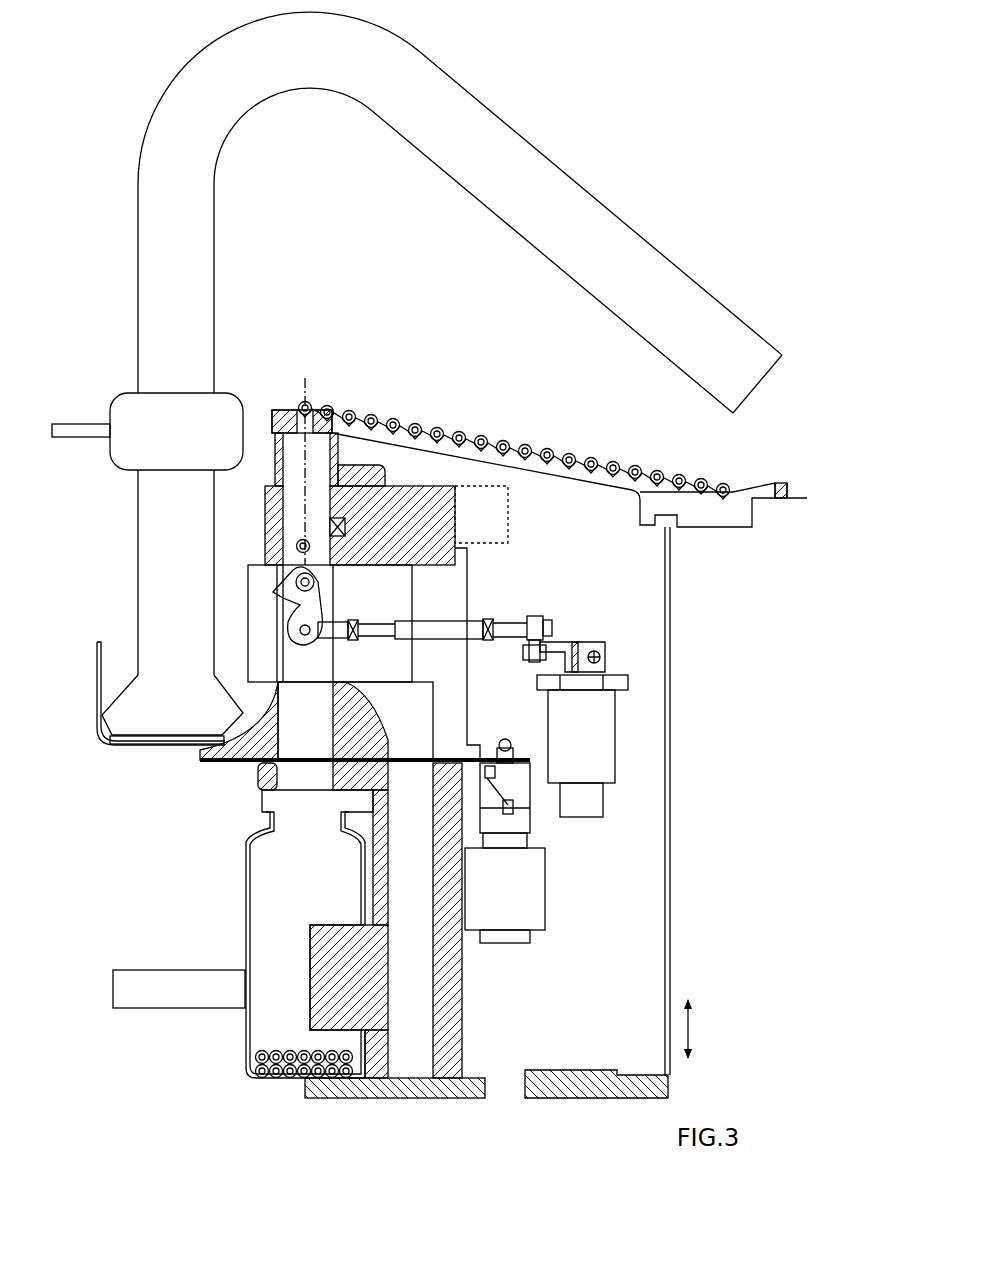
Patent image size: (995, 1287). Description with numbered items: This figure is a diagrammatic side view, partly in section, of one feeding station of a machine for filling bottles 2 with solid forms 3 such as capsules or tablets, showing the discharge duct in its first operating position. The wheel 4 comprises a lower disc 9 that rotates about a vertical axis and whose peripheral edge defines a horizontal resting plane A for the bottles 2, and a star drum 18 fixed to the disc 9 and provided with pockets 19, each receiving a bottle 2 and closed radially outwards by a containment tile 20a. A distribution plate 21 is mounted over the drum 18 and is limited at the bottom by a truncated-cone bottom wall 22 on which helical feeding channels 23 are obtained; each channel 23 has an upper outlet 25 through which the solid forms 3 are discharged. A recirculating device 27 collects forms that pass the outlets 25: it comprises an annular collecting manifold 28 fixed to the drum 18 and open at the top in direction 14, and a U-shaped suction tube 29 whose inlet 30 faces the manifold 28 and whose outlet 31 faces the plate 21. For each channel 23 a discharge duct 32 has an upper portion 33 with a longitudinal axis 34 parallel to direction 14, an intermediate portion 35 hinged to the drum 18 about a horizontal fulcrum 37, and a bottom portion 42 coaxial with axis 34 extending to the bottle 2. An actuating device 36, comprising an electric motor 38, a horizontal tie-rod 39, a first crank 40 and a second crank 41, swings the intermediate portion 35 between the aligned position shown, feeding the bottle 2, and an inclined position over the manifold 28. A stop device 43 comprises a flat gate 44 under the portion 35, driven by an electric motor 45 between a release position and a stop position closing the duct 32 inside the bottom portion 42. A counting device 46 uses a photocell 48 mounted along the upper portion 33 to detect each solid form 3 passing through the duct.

The bottle 2 is at (255, 1020).
The solid forms 3 is at (634, 466).
The wheel 4 is at (310, 1108).
The lower disc 9 is at (578, 1096).
The direction 14 is at (704, 1029).
The star drum 18 is at (445, 534).
The pocket 19 is at (308, 963).
The containment tile 20a is at (135, 1003).
The distribution plate 21 is at (738, 523).
The bottom wall 22 is at (676, 484).
The feeding channel 23 is at (503, 440).
The upper outlet 25 is at (312, 408).
The recirculating device 27 is at (598, 143).
The collecting manifold 28 is at (95, 672).
The suction tube 29 is at (478, 117).
The inlet 30 is at (132, 727).
The outlet 31 is at (765, 388).
The discharge duct 32 is at (207, 596).
The upper portion 33 is at (290, 500).
The longitudinal axis 34 is at (305, 388).
The intermediate portion 35 is at (275, 651).
The actuating device 36 is at (640, 728).
The fulcrum 37 is at (300, 585).
The electric motor 38 is at (610, 768).
The tie-rod 39 is at (475, 625).
The first crank 40 is at (555, 645).
The second crank 41 is at (312, 596).
The bottom portion 42 is at (288, 728).
The stop device 43 is at (412, 748).
The flat gate 44 is at (278, 770).
The electric motor 45 is at (532, 890).
The counting device 46 is at (342, 505).
The photocell 48 is at (345, 520).
The resting plane A is at (340, 1070).